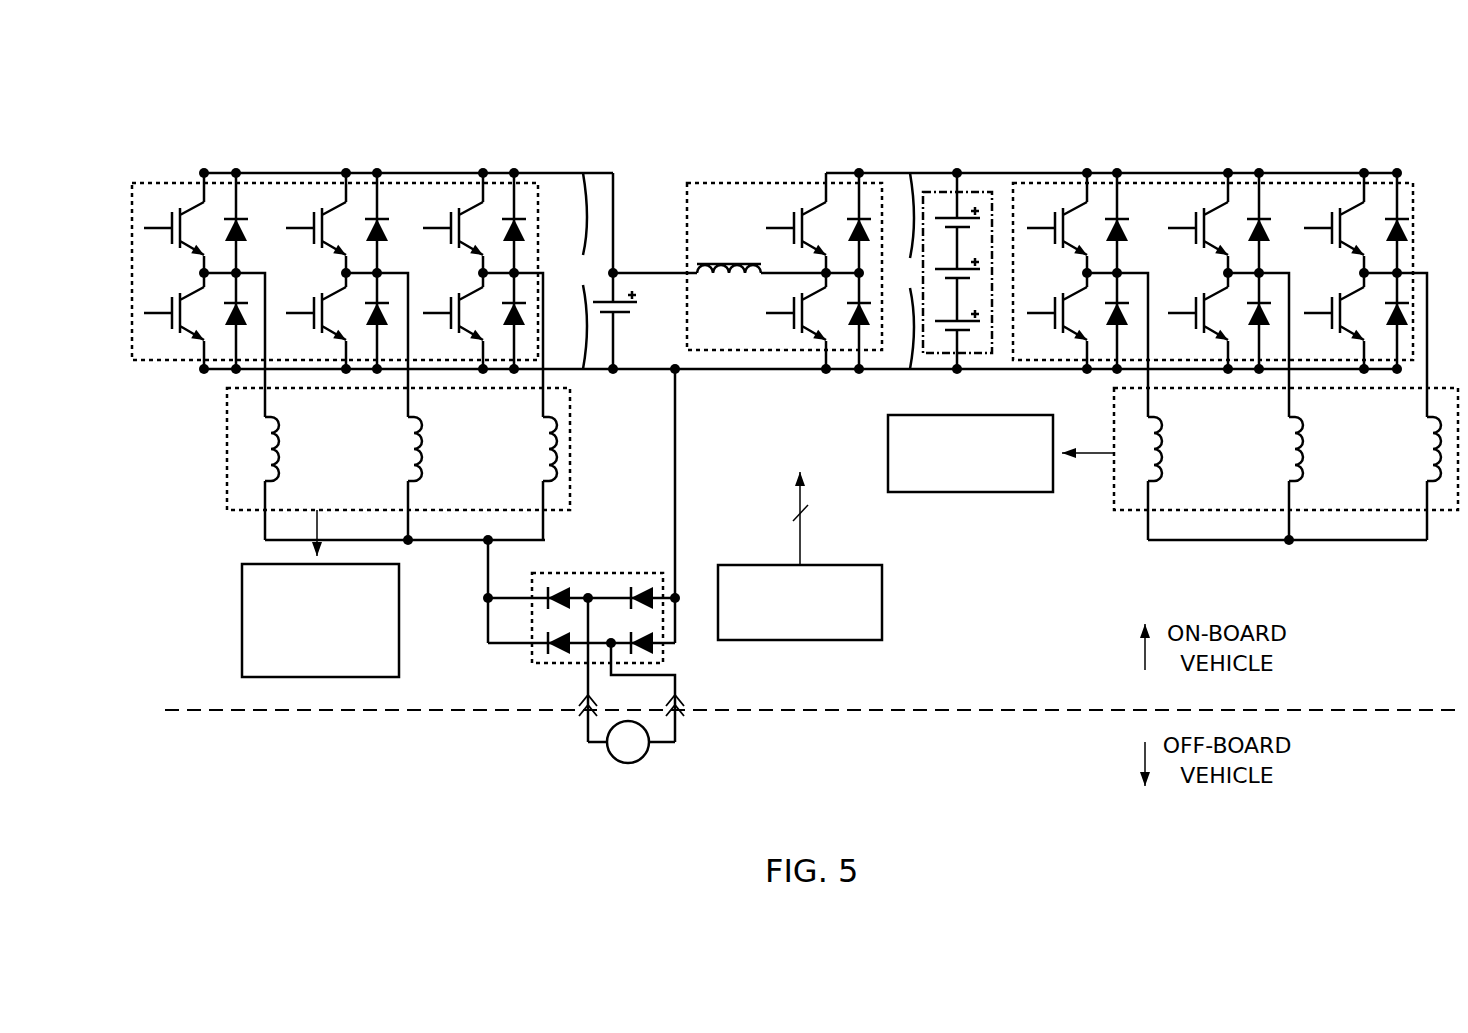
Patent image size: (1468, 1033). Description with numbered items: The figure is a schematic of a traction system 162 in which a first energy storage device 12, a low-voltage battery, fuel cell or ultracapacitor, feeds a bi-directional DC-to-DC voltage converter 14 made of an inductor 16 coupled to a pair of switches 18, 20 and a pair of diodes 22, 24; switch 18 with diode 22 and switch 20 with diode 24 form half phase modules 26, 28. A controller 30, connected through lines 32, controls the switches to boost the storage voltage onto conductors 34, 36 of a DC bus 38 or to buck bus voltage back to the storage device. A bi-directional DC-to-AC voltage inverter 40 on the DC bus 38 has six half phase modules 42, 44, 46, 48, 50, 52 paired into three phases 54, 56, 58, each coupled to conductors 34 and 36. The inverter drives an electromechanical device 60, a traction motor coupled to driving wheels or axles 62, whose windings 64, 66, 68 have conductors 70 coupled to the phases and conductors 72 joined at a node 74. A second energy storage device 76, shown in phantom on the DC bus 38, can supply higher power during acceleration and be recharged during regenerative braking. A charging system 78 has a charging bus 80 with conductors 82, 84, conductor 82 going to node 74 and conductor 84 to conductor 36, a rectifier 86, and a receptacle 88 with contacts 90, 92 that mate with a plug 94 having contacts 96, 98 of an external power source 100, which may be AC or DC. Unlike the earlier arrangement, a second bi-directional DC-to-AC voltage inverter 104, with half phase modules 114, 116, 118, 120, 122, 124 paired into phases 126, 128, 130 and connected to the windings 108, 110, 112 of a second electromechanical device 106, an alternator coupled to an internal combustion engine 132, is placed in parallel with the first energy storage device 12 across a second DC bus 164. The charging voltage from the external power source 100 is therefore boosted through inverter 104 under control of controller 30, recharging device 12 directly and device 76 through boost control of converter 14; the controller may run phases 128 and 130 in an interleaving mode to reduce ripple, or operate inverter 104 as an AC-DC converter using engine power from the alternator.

The first energy storage device 12 is at (620, 313).
The bi-directional DC-to-DC voltage converter 14 is at (690, 182).
The inductor 16 is at (703, 262).
The switch 18 is at (778, 228).
The switch 20 is at (778, 313).
The diode 22 is at (866, 220).
The diode 24 is at (866, 325).
The half phase module 26 is at (810, 198).
The half phase module 28 is at (752, 315).
The controller 30 is at (883, 602).
The lines 32 is at (802, 533).
The conductor 34 is at (907, 172).
The conductor 36 is at (898, 369).
The DC bus 38 is at (911, 271).
The bi-directional DC-to-AC voltage inverter 40 is at (1025, 182).
The half phase module 42 is at (1068, 185).
The half phase module 44 is at (1066, 283).
The half phase module 46 is at (1208, 185).
The half phase module 48 is at (1207, 283).
The half phase module 50 is at (1345, 185).
The half phase module 52 is at (1343, 283).
The phase 54 is at (1098, 160).
The phase 56 is at (1225, 158).
The phase 58 is at (1363, 158).
The electromechanical device 60 is at (1113, 421).
The driving wheels or axles 62 is at (887, 460).
The winding 64 is at (1158, 455).
The winding 66 is at (1300, 455).
The winding 68 is at (1432, 428).
The conductors 70 is at (1150, 405).
The conductors 72 is at (1152, 498).
The node 74 is at (1272, 545).
The second energy storage device 76 is at (967, 357).
The charging system 78 is at (664, 792).
The charging bus 80 is at (490, 556).
The conductor 82 is at (486, 560).
The conductor 84 is at (677, 560).
The rectifier 86 is at (531, 612).
The receptacle 88 is at (512, 698).
The contact 90 is at (559, 680).
The contact 92 is at (670, 693).
The plug 94 is at (525, 729).
The contact 96 is at (585, 720).
The contact 98 is at (678, 719).
The external power source 100 is at (630, 765).
The second bi-directional DC-to-AC voltage inverter 104 is at (140, 182).
The second electromechanical device 106 is at (228, 412).
The winding 108 is at (273, 453).
The winding 110 is at (415, 453).
The winding 112 is at (546, 436).
The half phase module 114 is at (178, 200).
The half phase module 116 is at (186, 281).
The half phase module 118 is at (320, 200).
The half phase module 120 is at (328, 281).
The half phase module 122 is at (457, 200).
The half phase module 124 is at (465, 281).
The phase 126 is at (206, 152).
The phase 128 is at (351, 152).
The phase 130 is at (486, 152).
The internal combustion engine 132 is at (242, 640).
The traction system 162 is at (795, 62).
The second DC bus 164 is at (800, 271).